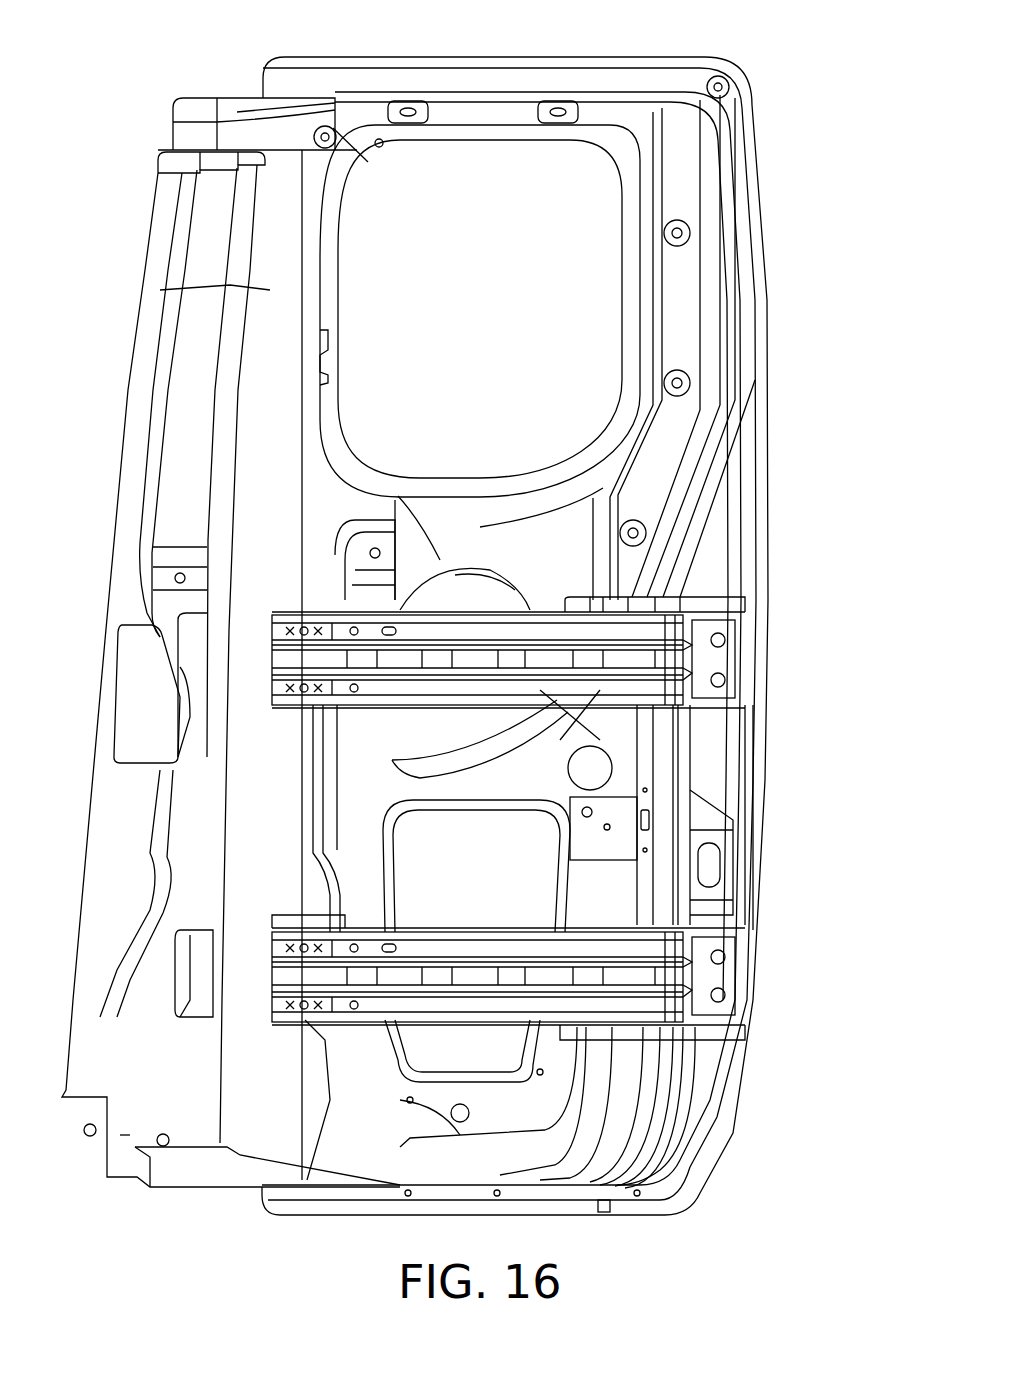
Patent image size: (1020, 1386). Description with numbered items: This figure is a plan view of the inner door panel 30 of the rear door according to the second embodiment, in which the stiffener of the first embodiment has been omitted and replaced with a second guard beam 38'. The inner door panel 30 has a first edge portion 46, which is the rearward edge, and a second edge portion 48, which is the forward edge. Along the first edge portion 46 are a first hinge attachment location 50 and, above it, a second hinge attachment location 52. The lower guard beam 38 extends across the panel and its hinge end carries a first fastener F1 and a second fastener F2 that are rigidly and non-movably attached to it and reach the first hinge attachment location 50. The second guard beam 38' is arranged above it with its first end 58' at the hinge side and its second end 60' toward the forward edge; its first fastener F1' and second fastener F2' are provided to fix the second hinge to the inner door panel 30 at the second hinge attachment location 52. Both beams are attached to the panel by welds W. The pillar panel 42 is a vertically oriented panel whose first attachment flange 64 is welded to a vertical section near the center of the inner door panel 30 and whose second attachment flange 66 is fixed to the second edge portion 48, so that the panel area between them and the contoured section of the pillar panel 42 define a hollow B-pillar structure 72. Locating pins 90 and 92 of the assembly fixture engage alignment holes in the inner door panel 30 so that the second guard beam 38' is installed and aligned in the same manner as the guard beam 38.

The inner door panel 30 is at (636, 50).
The guard beam 38 is at (437, 990).
The second guard beam 38' is at (483, 585).
The pillar panel 42 is at (275, 273).
The first edge portion 46 is at (775, 748).
The second edge portion 48 is at (107, 587).
The first hinge attachment location 50 is at (748, 980).
The second hinge attachment location 52 is at (748, 665).
The first end of the second guard beam 58' is at (655, 590).
The second end of the second guard beam 60' is at (490, 642).
The first attachment flange 64 is at (362, 525).
The second attachment flange 66 is at (215, 458).
The hollow B-pillar structure 72 is at (270, 355).
The first pin 90 is at (384, 147).
The second pin 92 is at (608, 1213).
The weld W is at (316, 628).
The first fastener F1 is at (769, 947).
The second fastener F2 is at (759, 1022).
The first fastener of the second guard beam F1' is at (768, 630).
The second fastener of the second guard beam F2' is at (768, 690).